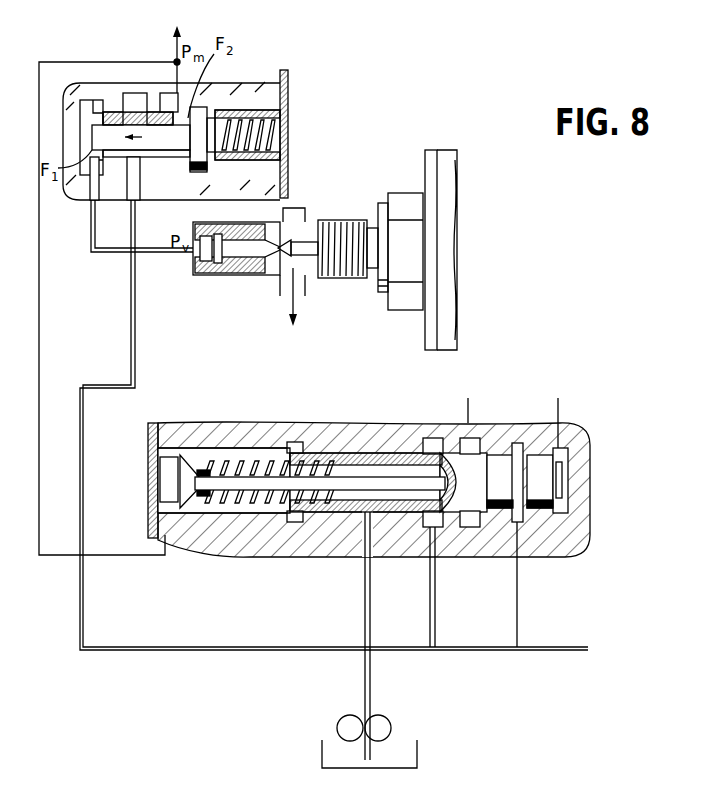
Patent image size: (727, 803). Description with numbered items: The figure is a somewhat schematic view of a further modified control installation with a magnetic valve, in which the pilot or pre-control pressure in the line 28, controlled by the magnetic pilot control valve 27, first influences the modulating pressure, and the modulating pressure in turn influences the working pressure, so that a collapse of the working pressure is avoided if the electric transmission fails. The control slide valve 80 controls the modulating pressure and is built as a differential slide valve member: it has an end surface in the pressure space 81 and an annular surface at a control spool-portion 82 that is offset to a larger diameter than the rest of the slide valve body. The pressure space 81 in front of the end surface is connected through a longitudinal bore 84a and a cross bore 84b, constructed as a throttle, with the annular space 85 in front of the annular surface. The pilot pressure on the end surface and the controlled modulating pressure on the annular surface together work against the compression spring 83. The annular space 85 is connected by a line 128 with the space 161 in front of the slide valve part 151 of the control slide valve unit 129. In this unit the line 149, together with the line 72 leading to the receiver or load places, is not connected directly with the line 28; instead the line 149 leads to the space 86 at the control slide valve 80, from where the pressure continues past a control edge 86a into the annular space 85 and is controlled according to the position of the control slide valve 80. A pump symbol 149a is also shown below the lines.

The magnetic pilot control valve 27 is at (412, 188).
The line 28 is at (107, 256).
The line 72 is at (581, 646).
The control slide valve 80 is at (135, 116).
The pressure space 81 is at (80, 116).
The control spool-portion 82 is at (197, 171).
The compression spring 83 is at (248, 112).
The longitudinal bore 84a is at (103, 135).
The cross bore 84b is at (170, 118).
The annular space 85 is at (173, 173).
The space 86 is at (126, 180).
The control edge 86a is at (147, 165).
The line 128 is at (39, 344).
The control slide valve unit 129 is at (316, 438).
The line 149 is at (320, 648).
The pump 149a is at (391, 732).
The slide valve part 151 is at (208, 455).
The space 161 is at (150, 509).